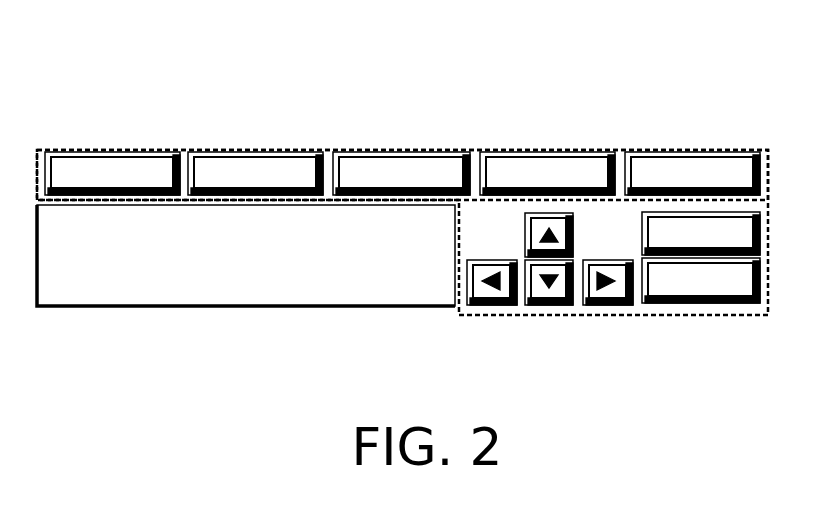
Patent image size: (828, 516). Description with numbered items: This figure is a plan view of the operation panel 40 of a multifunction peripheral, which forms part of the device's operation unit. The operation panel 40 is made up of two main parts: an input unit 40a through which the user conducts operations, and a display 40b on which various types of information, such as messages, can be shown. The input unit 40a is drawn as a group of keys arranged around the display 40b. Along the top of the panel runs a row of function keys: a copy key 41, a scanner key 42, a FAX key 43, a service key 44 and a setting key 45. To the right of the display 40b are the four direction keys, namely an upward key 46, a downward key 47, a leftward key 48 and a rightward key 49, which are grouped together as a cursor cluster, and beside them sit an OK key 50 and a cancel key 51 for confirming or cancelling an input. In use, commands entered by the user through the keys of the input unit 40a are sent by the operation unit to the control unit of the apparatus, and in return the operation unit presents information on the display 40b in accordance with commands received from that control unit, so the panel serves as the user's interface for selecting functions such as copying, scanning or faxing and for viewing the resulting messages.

The operation panel 40 is at (485, 78).
The input unit 40a is at (615, 150).
The display 40b is at (258, 307).
The copy key 41 is at (118, 149).
The scanner key 42 is at (257, 149).
The FAX key 43 is at (399, 149).
The service key 44 is at (539, 149).
The setting key 45 is at (688, 149).
The upward direction key 46 is at (575, 233).
The downward direction key 47 is at (550, 306).
The leftward direction key 48 is at (493, 306).
The rightward direction key 49 is at (607, 306).
The OK key 50 is at (763, 223).
The cancel key 51 is at (722, 306).